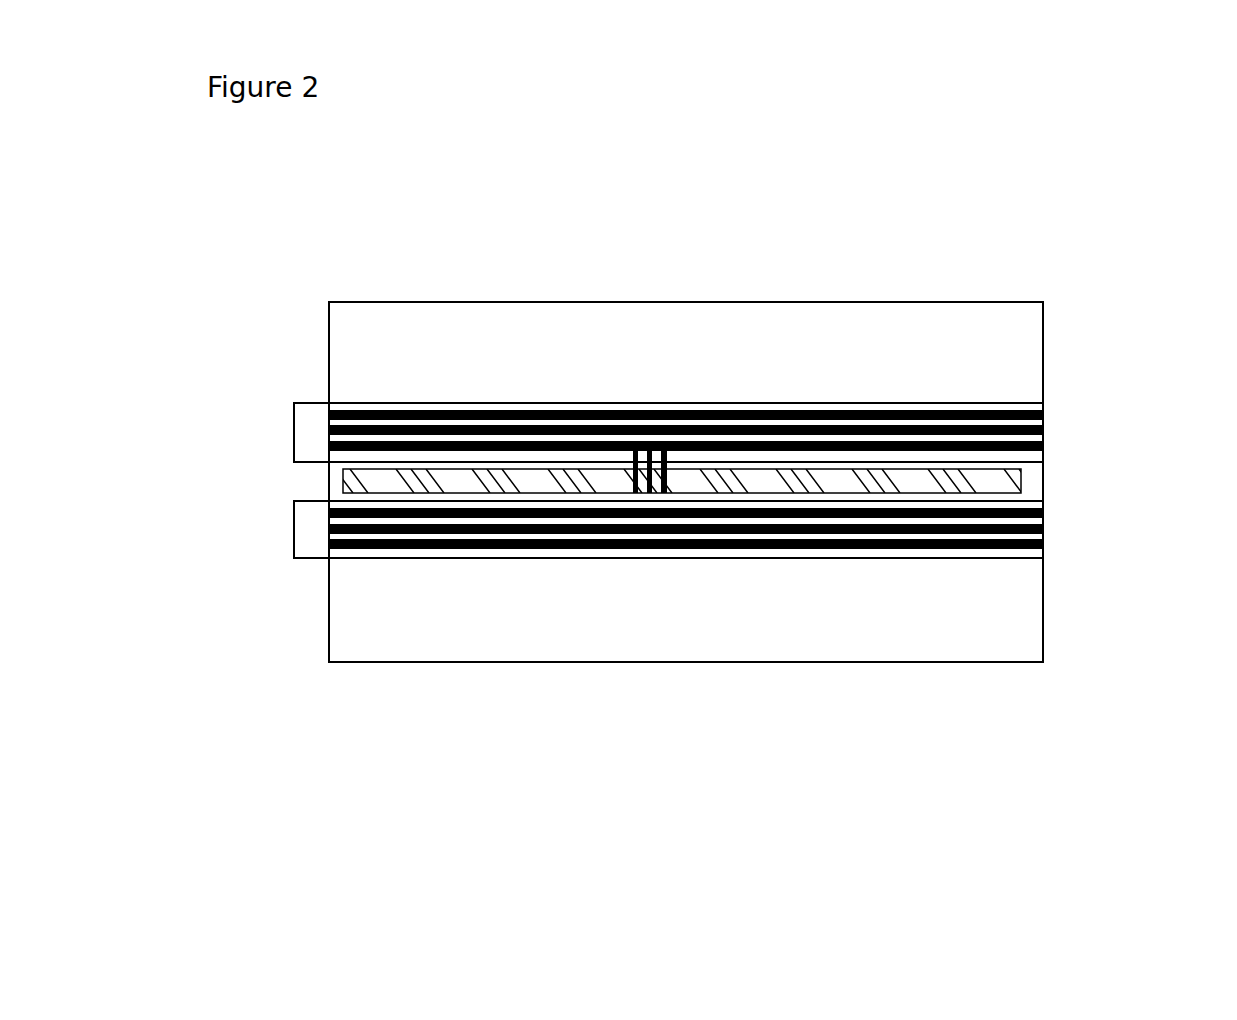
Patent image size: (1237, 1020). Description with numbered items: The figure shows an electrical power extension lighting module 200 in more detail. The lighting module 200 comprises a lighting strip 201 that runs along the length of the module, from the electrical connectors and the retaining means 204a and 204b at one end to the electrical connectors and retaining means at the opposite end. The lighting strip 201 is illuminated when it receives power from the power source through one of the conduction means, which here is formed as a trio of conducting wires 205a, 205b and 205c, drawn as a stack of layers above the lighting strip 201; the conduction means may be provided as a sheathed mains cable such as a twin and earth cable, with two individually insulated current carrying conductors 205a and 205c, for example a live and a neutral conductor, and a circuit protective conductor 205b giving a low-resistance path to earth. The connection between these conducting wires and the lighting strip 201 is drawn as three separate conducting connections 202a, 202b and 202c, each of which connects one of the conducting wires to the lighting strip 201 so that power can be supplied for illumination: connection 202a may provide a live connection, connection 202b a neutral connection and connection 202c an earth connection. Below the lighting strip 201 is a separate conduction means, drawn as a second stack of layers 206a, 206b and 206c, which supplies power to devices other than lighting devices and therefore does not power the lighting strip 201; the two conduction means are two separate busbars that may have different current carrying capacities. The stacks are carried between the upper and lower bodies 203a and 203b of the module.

The lighting module 200 is at (702, 466).
The lighting strip 201 is at (537, 480).
The conducting connection 202a is at (627, 493).
The conducting connection 202b is at (652, 493).
The conducting connection 202c is at (667, 493).
The upper substrate 203a is at (960, 355).
The lower substrate 203b is at (963, 625).
The retaining means 204a is at (313, 426).
The retaining means 204b is at (311, 532).
The conducting wire 205a is at (1043, 415).
The conducting wire 205b is at (1043, 437).
The conducting wire 205c is at (1043, 452).
The lower first electrode layer 206a is at (1043, 513).
The lower second electrode layer 206b is at (1043, 533).
The lower third electrode layer 206c is at (1043, 545).